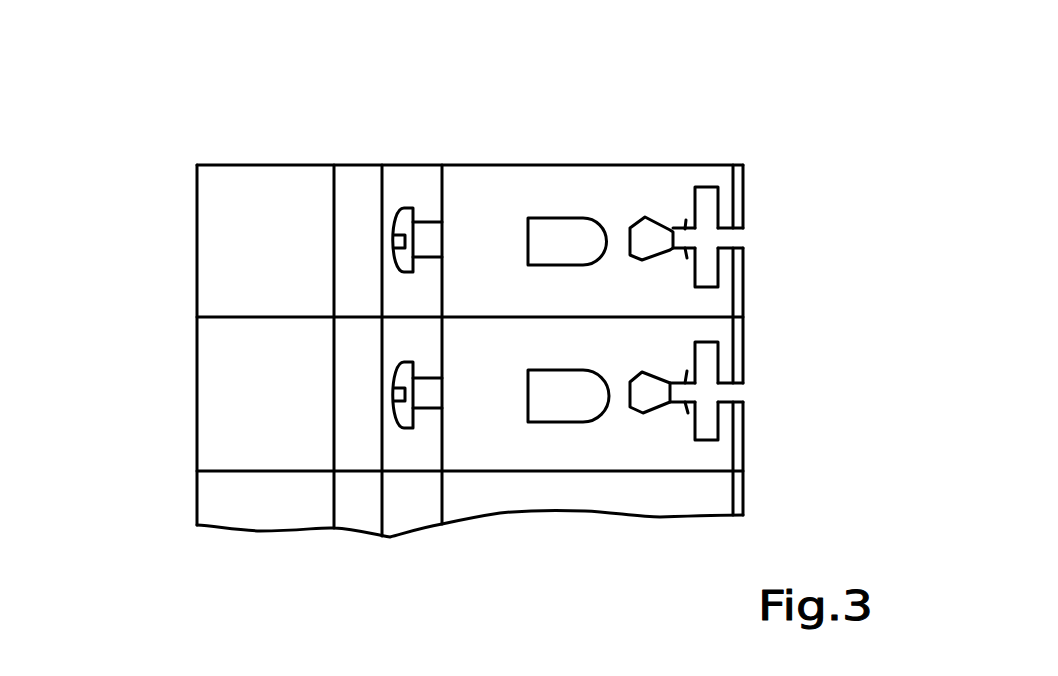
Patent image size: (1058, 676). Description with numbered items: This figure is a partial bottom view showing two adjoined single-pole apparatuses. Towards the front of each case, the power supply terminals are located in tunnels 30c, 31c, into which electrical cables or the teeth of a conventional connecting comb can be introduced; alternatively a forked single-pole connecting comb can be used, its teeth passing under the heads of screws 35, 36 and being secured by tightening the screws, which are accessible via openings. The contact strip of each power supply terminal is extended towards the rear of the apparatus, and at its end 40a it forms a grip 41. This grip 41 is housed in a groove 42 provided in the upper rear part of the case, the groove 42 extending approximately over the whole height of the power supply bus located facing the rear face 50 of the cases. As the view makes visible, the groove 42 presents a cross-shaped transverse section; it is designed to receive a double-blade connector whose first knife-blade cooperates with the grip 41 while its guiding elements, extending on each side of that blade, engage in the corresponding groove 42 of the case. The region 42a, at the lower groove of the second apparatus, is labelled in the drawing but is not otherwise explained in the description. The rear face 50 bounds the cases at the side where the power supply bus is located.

The tunnel 30c is at (558, 218).
The tunnel 31c is at (550, 422).
The screw 35 is at (425, 219).
The screw 36 is at (393, 372).
The end of contact strip 40a is at (644, 216).
The grip 41 is at (672, 226).
The groove 42 is at (708, 202).
The connector horizontal bar 42a is at (720, 418).
The rear face 50 is at (745, 268).